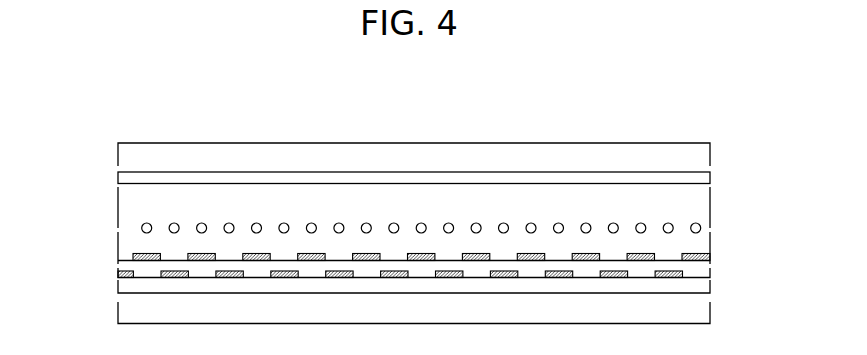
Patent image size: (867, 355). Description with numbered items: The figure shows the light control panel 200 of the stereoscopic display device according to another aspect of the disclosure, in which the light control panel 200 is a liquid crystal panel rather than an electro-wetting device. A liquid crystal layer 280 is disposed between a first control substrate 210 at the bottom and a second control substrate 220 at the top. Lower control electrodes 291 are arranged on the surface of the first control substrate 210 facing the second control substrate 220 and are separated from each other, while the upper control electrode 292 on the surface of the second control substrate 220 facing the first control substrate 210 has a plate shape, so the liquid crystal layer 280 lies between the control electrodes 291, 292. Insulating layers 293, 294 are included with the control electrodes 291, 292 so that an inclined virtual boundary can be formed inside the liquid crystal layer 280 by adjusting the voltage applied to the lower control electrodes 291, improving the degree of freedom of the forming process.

The light control panel 200 is at (408, 82).
The first control substrate 210 is at (697, 310).
The second control substrate 220 is at (698, 149).
The liquid crystal layer 280 is at (698, 208).
The lower control electrodes 291 is at (716, 257).
The upper control electrode 292 is at (698, 177).
The insulating layer 293 is at (126, 263).
The insulating layer 294 is at (697, 282).